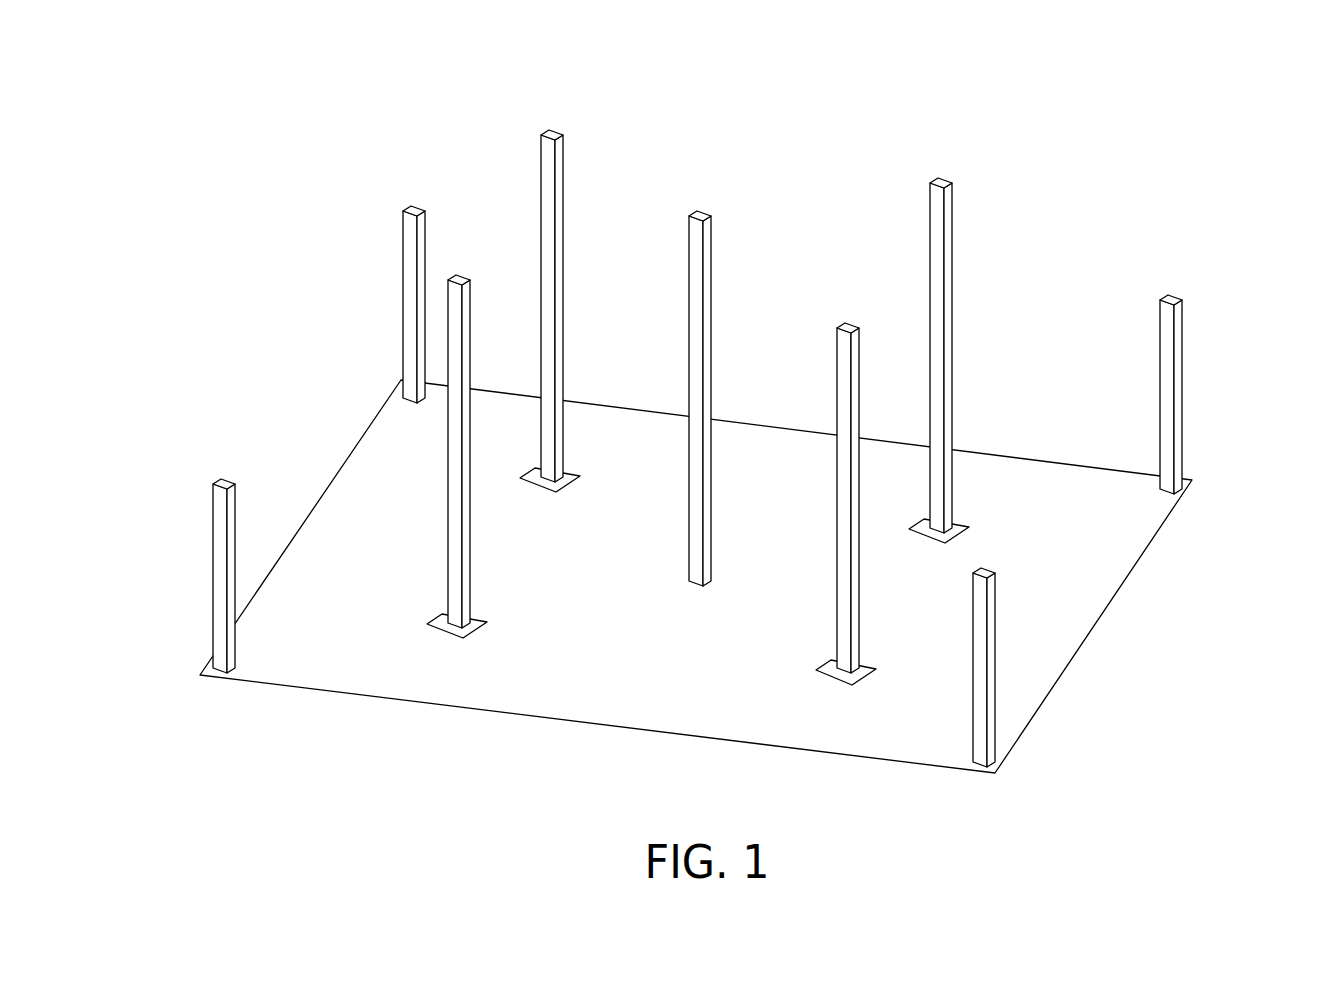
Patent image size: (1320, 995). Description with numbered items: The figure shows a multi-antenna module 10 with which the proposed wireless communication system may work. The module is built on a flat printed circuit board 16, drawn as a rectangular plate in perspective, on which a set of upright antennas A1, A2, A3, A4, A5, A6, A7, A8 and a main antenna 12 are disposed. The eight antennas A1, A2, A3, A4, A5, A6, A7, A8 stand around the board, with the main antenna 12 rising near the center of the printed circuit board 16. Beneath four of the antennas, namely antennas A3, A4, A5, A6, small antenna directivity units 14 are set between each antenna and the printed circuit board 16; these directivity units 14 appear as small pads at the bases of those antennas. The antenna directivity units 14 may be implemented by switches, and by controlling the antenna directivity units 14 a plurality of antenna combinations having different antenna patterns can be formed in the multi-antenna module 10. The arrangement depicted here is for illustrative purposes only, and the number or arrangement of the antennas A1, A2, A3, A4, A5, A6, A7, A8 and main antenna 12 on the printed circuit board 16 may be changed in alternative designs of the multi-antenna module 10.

The multi-antenna module 10 is at (1152, 97).
The main antenna 12 is at (702, 210).
The antenna directivity unit 14 is at (563, 473).
The printed circuit board 16 is at (1160, 528).
The antenna A1 is at (221, 483).
The antenna A2 is at (412, 212).
The antenna A3 is at (453, 277).
The antenna A4 is at (552, 132).
The antenna A5 is at (847, 323).
The antenna A6 is at (947, 205).
The antenna A7 is at (988, 718).
The antenna A8 is at (1176, 342).